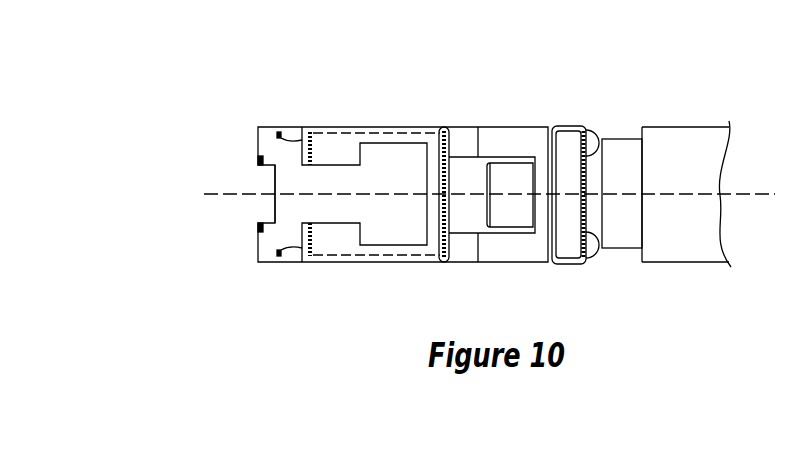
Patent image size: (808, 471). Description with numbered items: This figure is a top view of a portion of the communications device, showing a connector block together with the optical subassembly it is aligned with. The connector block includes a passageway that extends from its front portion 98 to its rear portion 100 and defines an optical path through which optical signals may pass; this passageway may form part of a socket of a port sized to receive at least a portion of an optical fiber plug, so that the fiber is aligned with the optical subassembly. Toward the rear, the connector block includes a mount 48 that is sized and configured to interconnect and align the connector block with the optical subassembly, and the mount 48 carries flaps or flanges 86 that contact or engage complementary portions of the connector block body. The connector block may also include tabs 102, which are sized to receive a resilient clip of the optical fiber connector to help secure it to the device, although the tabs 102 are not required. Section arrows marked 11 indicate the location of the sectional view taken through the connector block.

The front portion 98 is at (236, 101).
The tabs 102 is at (333, 142).
The mount 48 is at (568, 128).
The flaps or flanges 86 is at (577, 128).
The rear portion 100 is at (612, 103).
The section line 11 is at (204, 194).